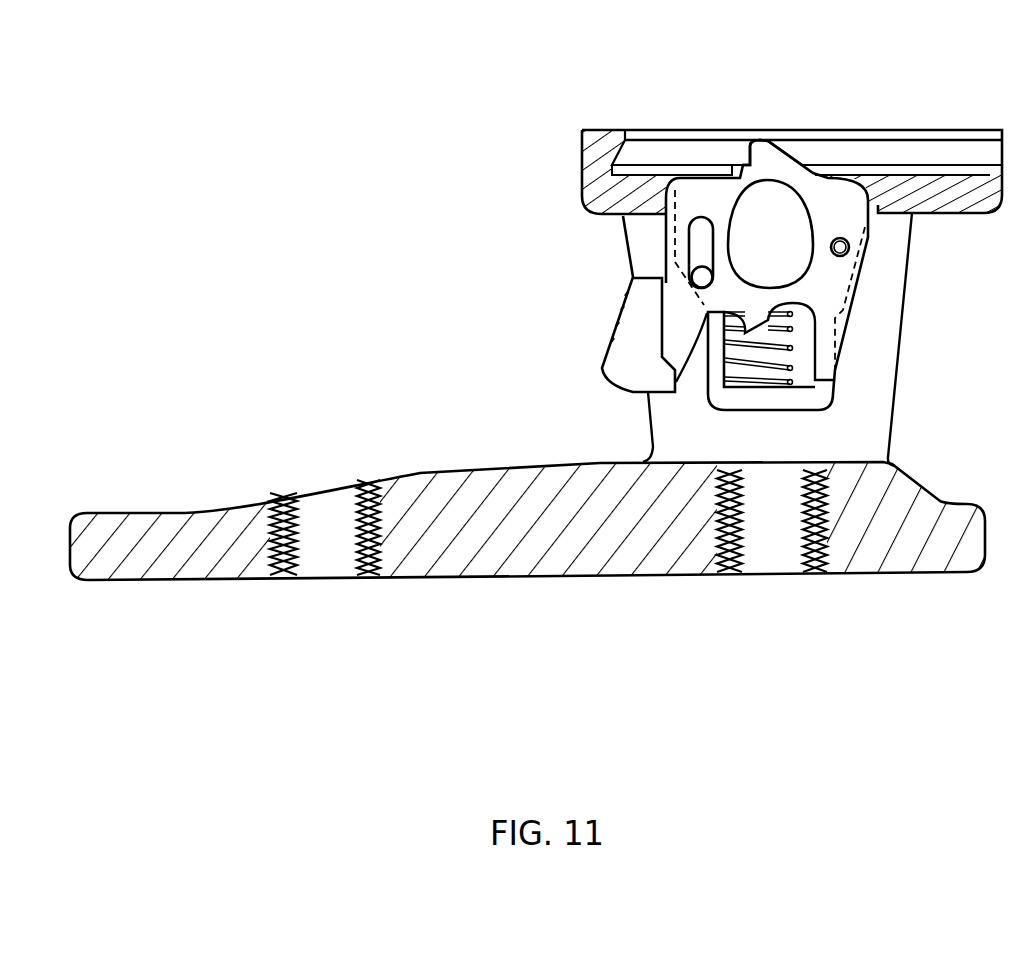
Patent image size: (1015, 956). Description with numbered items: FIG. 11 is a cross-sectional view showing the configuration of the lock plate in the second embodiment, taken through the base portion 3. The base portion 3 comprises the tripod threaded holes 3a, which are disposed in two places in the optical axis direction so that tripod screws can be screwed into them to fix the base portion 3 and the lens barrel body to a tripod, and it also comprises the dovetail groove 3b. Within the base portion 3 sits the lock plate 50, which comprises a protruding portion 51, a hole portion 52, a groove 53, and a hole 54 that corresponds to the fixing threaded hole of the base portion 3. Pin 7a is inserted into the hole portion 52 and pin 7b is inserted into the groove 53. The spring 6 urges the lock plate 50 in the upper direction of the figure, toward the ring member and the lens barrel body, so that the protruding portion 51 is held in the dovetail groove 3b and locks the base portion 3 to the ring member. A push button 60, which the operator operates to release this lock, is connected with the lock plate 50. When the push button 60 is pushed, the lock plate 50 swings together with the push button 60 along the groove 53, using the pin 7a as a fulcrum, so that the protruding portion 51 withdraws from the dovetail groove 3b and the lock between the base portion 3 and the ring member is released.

The base portion 3 is at (545, 565).
The tripod threaded holes 3a is at (362, 563).
The dovetail groove 3b is at (623, 135).
The spring 6 is at (708, 382).
The pin 7a is at (849, 254).
The pin 7b is at (692, 278).
The lock plate 50 is at (840, 335).
The protruding portion 51 is at (770, 150).
The hole portion 52 is at (850, 246).
The groove 53 is at (688, 243).
The hole 54 is at (811, 178).
The push button 60 is at (598, 365).